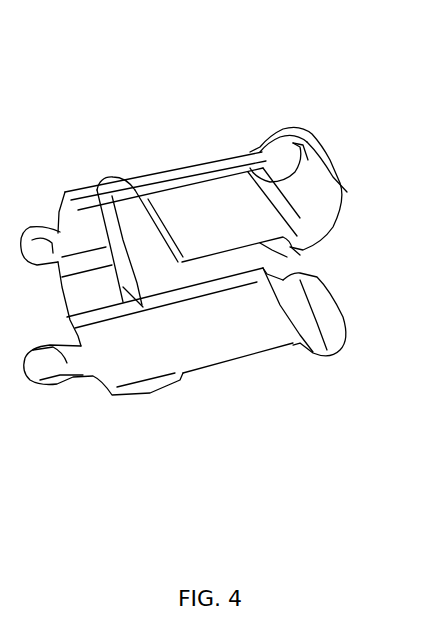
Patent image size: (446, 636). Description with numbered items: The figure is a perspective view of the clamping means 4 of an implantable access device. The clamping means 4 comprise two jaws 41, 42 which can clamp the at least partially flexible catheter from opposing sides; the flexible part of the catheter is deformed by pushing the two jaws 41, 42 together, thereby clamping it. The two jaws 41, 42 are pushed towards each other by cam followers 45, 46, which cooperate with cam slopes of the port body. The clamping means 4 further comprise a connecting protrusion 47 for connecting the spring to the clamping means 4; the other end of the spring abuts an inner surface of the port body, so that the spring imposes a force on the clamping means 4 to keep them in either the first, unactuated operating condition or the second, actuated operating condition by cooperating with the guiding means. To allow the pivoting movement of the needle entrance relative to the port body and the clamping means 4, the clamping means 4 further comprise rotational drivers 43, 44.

The clamping means 4 is at (137, 128).
The jaw 41 is at (298, 212).
The jaw 42 is at (302, 258).
The rotational driver 43 is at (59, 365).
The rotational driver 44 is at (42, 252).
The cam follower 45 is at (293, 325).
The cam follower 46 is at (267, 140).
The connecting protrusion 47 is at (133, 213).